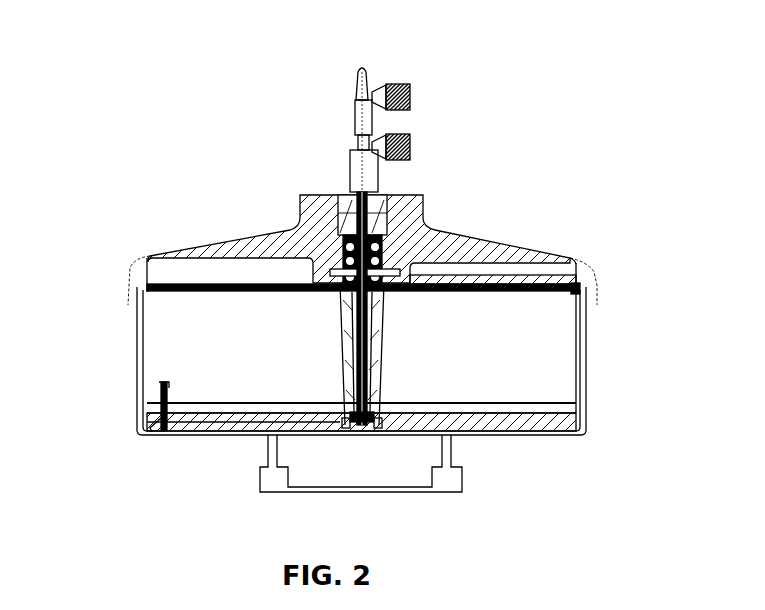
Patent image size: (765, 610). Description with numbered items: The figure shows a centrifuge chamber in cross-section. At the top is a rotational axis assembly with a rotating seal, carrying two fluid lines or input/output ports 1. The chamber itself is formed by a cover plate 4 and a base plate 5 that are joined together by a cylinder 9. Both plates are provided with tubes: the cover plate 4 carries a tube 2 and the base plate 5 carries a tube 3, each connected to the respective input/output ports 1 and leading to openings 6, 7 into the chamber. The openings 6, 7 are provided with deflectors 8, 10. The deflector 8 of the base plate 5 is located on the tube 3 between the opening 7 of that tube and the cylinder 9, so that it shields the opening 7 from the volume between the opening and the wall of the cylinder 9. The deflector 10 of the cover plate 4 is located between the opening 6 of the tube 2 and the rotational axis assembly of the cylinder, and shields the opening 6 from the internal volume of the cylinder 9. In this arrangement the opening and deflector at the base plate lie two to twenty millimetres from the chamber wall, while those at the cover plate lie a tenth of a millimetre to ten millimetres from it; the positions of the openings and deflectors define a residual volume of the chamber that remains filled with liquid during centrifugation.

The input/output ports 1 is at (412, 95).
The tube 2 is at (433, 281).
The tube 3 is at (240, 426).
The cover plate 4 is at (180, 277).
The base plate 5 is at (203, 408).
The opening 6 is at (570, 263).
The opening 7 is at (168, 400).
The deflector 8 is at (163, 397).
The cylinder 9 is at (137, 326).
The deflector 10 is at (557, 305).